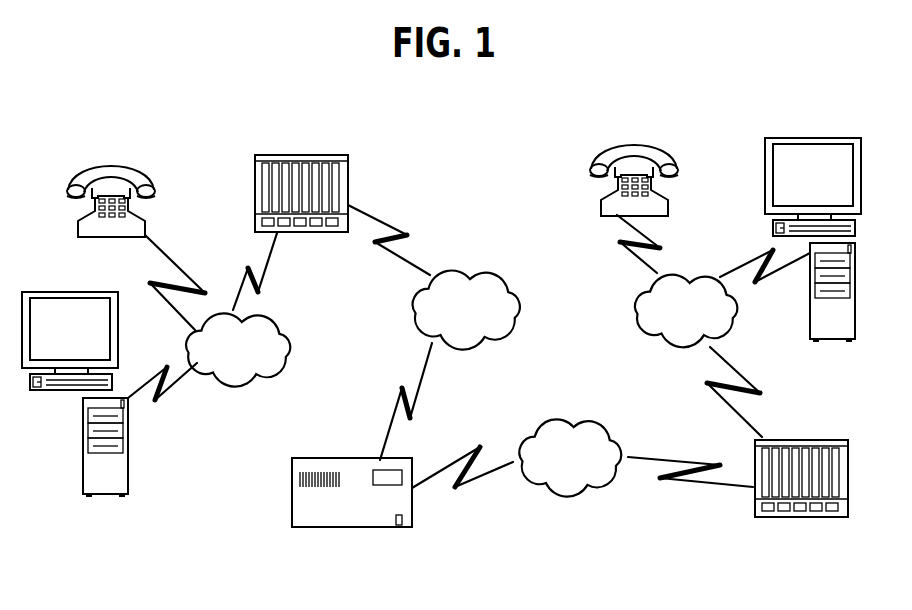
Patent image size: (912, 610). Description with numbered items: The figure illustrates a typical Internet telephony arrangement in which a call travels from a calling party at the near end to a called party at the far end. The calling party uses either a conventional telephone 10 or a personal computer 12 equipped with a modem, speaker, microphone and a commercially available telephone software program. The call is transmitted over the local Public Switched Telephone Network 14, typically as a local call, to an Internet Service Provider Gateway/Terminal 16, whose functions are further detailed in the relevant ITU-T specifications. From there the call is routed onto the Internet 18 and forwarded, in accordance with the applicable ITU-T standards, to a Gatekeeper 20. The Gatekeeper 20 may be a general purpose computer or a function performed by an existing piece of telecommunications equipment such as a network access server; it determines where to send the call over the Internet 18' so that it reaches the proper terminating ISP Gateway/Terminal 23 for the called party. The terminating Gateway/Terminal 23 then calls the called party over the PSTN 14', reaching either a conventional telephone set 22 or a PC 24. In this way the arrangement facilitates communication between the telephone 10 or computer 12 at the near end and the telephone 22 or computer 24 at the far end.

The conventional telephone 10 is at (117, 165).
The personal computer 12 is at (62, 291).
The Public Switched Telephone Network 14 is at (238, 366).
The ISP Gateway/Terminal 16 is at (348, 178).
The Internet 18 is at (466, 295).
The Gatekeeper 20 is at (412, 520).
The Internet 18' is at (570, 482).
The Public Switched Telephone Network 14' is at (672, 322).
The conventional telephone set 22 is at (638, 142).
The terminating ISP Gateway/Terminal 23 is at (840, 440).
The PC 24 is at (810, 139).